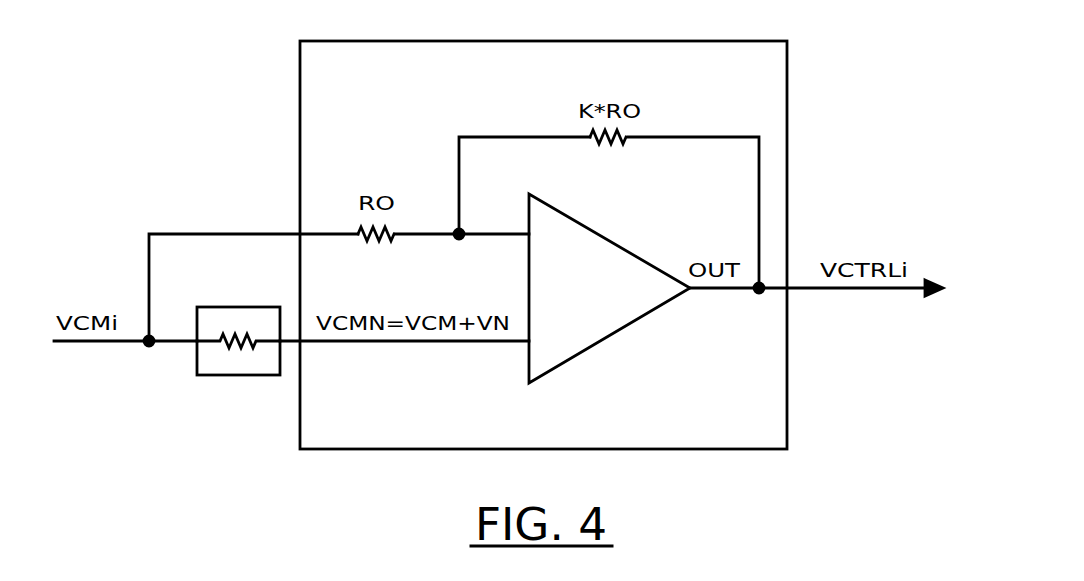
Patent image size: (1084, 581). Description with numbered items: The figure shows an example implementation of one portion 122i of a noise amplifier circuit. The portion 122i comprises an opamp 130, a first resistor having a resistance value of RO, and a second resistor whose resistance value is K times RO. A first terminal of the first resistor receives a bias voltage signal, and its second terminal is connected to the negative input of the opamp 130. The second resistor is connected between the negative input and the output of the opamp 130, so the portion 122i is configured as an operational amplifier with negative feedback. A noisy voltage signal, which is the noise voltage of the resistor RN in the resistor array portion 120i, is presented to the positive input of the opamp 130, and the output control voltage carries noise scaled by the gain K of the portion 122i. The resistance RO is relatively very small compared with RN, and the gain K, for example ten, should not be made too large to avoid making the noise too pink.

The portion of the noise amplifier circuit 122i is at (386, 40).
The resistor array portion 120i is at (196, 358).
The opamp 130 is at (600, 233).